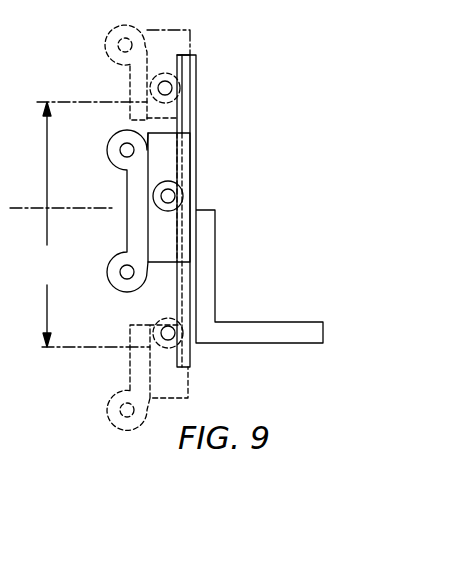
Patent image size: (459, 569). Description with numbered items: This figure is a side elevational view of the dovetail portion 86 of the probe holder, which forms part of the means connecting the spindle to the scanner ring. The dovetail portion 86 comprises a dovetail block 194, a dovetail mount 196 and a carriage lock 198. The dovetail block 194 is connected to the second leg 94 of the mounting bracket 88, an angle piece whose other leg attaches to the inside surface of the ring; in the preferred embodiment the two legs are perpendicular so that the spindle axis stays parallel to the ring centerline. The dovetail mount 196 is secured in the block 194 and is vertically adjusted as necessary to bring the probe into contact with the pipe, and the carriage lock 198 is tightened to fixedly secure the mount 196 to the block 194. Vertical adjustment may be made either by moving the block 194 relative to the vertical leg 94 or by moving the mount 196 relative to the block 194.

The dovetail portion 86 is at (106, 219).
The mounting bracket 88 is at (250, 199).
The second leg 94 is at (215, 258).
The dovetail block 194 is at (190, 121).
The dovetail mount 196 is at (168, 166).
The carriage lock 198 is at (175, 194).